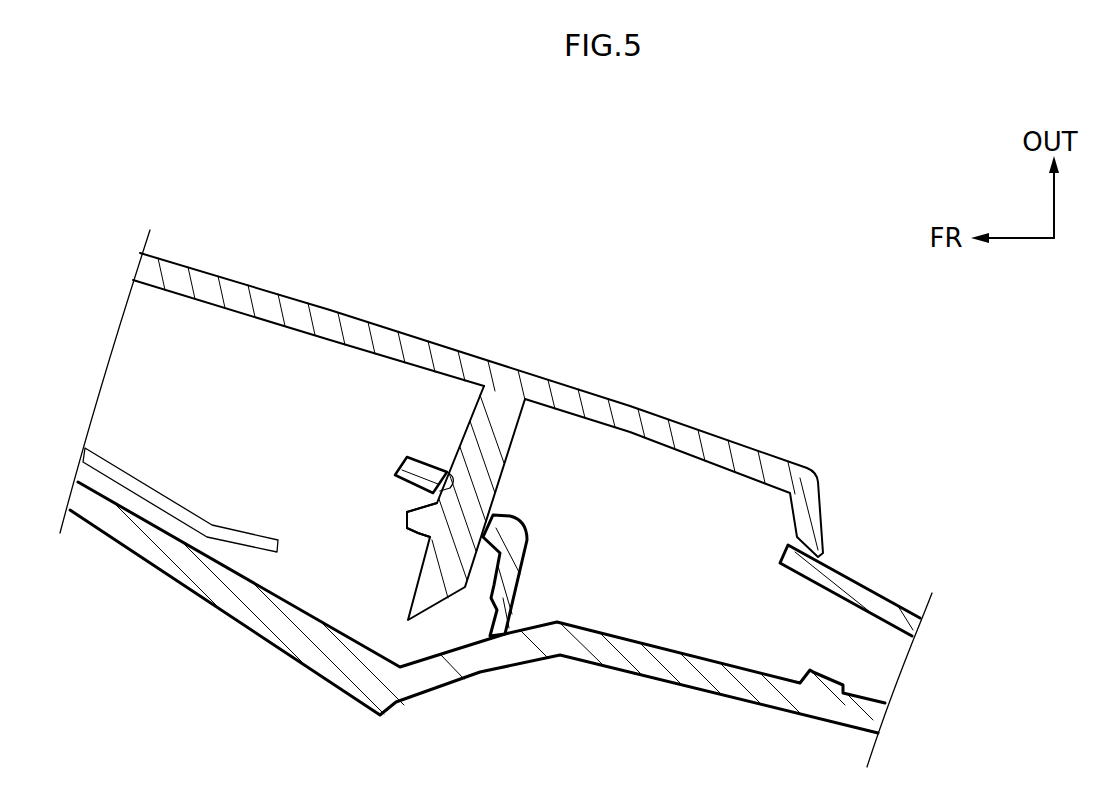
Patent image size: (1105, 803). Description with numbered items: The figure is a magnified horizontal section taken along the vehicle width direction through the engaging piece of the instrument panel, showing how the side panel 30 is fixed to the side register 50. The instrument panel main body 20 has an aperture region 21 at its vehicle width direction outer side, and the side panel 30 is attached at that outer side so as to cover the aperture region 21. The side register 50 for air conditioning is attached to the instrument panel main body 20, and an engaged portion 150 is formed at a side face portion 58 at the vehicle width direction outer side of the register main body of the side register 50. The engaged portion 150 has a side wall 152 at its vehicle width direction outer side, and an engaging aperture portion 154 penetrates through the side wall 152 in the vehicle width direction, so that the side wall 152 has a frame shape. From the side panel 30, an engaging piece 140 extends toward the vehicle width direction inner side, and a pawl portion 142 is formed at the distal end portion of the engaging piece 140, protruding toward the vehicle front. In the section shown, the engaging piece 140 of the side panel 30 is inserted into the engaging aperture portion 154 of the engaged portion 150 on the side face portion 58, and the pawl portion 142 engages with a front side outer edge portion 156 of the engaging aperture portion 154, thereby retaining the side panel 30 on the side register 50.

The side panel 30 is at (222, 268).
The aperture region 21 is at (767, 543).
The instrument panel main body 20 is at (873, 576).
The engaging piece 140 is at (492, 438).
The pawl portion 142 is at (405, 533).
The engaged portion 150 is at (560, 615).
The side wall 152 is at (528, 547).
The engaging aperture portion 154 is at (447, 468).
The front side outer edge portion 156 is at (405, 512).
The side register 50 is at (300, 664).
The side face portion 58 is at (222, 597).